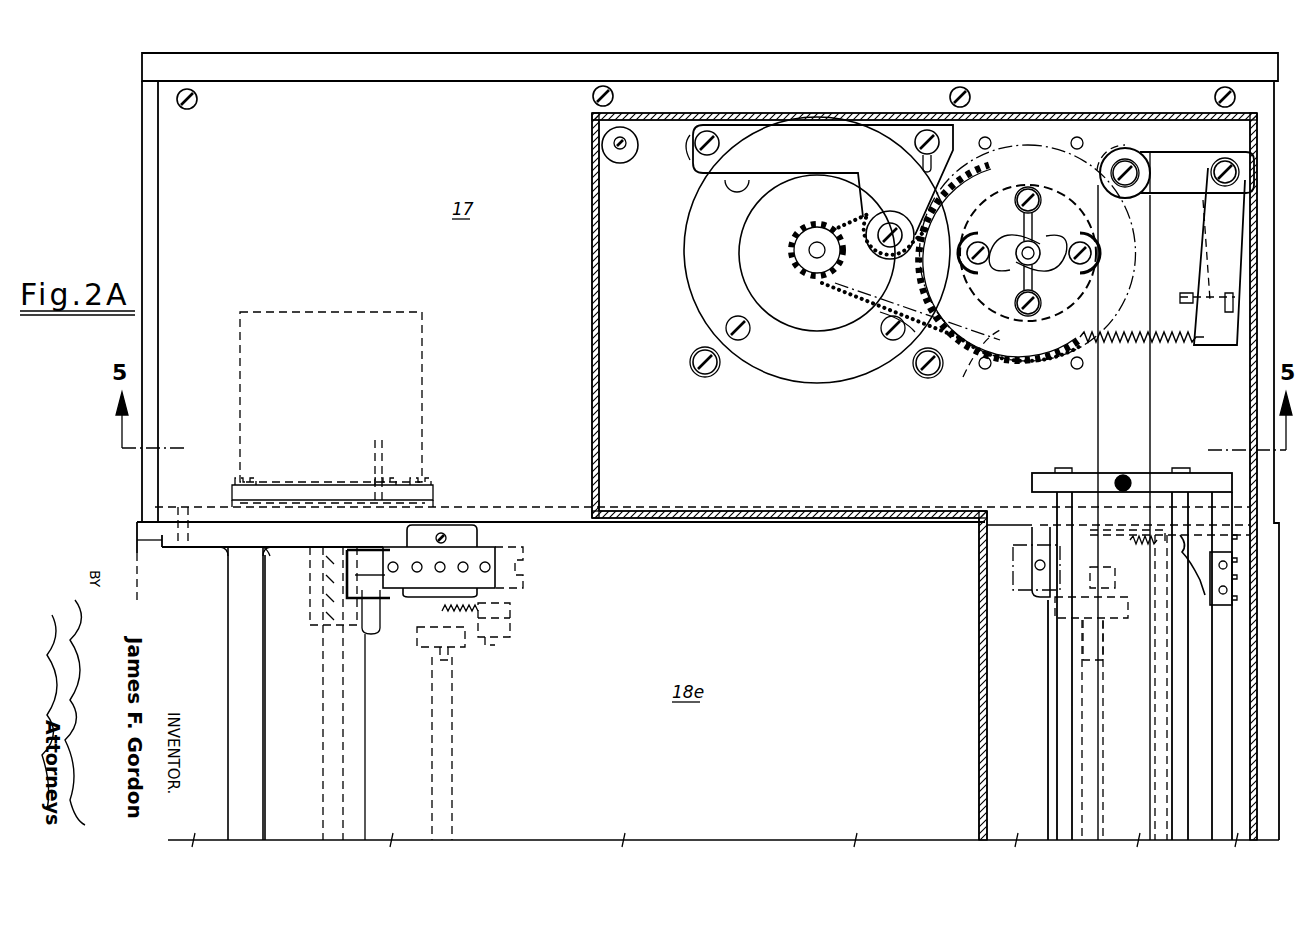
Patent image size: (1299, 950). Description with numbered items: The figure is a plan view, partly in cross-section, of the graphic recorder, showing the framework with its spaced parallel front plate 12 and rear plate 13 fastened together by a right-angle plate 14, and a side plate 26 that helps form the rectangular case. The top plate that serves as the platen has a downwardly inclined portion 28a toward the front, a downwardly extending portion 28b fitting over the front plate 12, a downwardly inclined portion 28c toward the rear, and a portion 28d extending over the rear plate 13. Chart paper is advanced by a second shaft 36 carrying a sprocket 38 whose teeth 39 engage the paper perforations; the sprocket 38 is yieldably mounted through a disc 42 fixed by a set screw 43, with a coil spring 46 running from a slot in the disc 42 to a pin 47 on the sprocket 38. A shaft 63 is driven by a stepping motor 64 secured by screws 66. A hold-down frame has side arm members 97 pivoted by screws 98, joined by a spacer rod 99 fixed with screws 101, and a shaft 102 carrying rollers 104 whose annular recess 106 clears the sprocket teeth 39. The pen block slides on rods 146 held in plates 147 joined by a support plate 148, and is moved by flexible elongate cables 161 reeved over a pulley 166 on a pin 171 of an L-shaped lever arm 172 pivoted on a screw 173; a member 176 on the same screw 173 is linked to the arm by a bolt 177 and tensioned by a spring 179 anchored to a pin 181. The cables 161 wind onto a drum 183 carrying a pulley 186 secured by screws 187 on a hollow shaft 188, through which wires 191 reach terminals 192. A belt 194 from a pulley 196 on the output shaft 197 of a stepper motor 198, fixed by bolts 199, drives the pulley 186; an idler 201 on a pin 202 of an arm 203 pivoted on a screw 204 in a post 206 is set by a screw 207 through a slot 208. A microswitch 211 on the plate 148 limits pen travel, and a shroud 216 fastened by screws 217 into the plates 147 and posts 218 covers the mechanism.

The front plate 12 is at (142, 172).
The rear plate 13 is at (1278, 62).
The plate 14 is at (558, 500).
The side plate 26 is at (150, 53).
The downwardly inclined portion 28a is at (193, 602).
The downwardly extending portion 28b is at (137, 545).
The downwardly inclined portion 28c is at (1200, 690).
The portion 28d is at (1275, 710).
The second shaft 36 is at (455, 718).
The sprocket 38 is at (525, 584).
The teeth 39 is at (485, 562).
The disc 42 is at (512, 625).
The set screw 43 is at (448, 668).
The coil spring 46 is at (480, 606).
The pin 47 is at (490, 642).
The shaft 63 is at (322, 722).
The stepping motor 64 is at (432, 378).
The screws 66 is at (262, 483).
The side arm member 97 is at (218, 545).
The screw 98 is at (194, 505).
The spacer rod 99 is at (228, 730).
The screw 101 is at (218, 522).
The shaft 102 is at (386, 461).
The roller 104 is at (345, 583).
The annular recess 106 is at (345, 568).
The rod 146 is at (1065, 775).
The plate 147 is at (1032, 478).
The support plate 148 is at (1218, 790).
The flexible elongate cable 161 is at (1098, 380).
The pulley 166 is at (1118, 152).
The pin 171 is at (1142, 160).
The L-shaped lever arm 172 is at (1200, 184).
The screw 173 is at (1230, 160).
The member 176 is at (1236, 219).
The bolt 177 is at (1198, 253).
The spring 179 is at (1205, 355).
The pin 181 is at (1055, 322).
The drum 183 is at (973, 363).
The pulley 186 is at (936, 270).
The screws 187 is at (1035, 180).
The hollow shaft 188 is at (1040, 250).
The wires 191 is at (1018, 265).
The terminals 192 is at (979, 242).
The belt 194 is at (880, 312).
The pulley 196 is at (790, 250).
The output shaft 197 is at (812, 258).
The stepper motor 198 is at (828, 320).
The bolts 199 is at (706, 377).
The idler 201 is at (866, 232).
The pin 202 is at (890, 223).
The arm 203 is at (925, 209).
The screw 204 is at (719, 143).
The post 206 is at (690, 150).
The screw 207 is at (915, 142).
The slot 208 is at (921, 163).
The microswitch 211 is at (1225, 610).
The shroud 216 is at (584, 254).
The screws 217 is at (620, 152).
The post 218 is at (630, 156).